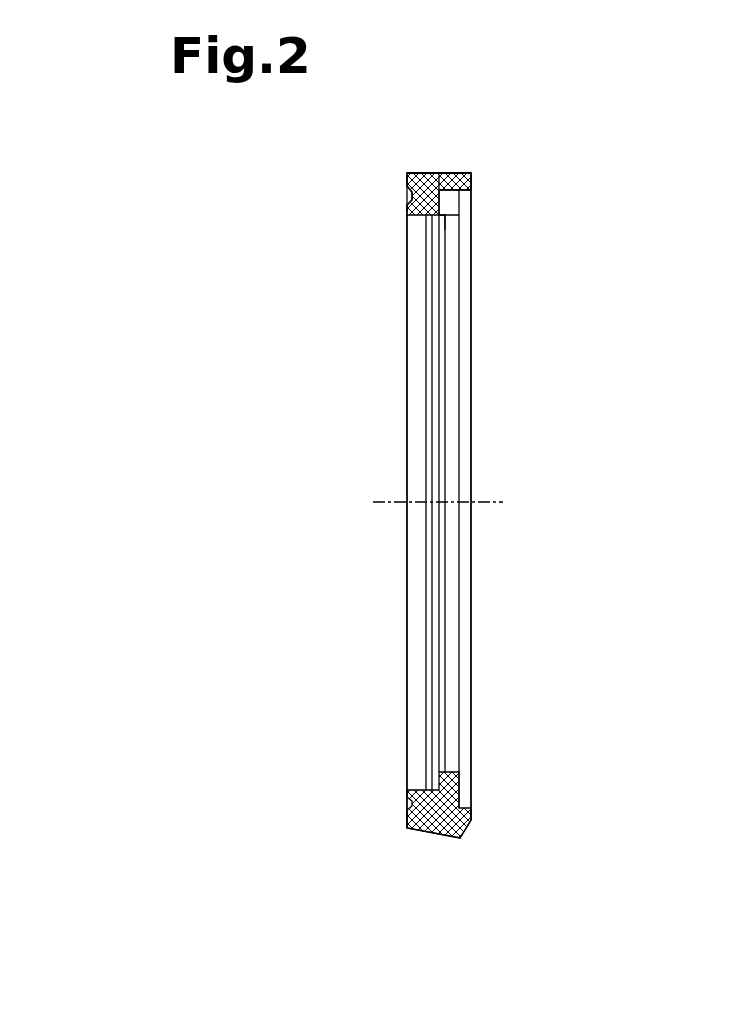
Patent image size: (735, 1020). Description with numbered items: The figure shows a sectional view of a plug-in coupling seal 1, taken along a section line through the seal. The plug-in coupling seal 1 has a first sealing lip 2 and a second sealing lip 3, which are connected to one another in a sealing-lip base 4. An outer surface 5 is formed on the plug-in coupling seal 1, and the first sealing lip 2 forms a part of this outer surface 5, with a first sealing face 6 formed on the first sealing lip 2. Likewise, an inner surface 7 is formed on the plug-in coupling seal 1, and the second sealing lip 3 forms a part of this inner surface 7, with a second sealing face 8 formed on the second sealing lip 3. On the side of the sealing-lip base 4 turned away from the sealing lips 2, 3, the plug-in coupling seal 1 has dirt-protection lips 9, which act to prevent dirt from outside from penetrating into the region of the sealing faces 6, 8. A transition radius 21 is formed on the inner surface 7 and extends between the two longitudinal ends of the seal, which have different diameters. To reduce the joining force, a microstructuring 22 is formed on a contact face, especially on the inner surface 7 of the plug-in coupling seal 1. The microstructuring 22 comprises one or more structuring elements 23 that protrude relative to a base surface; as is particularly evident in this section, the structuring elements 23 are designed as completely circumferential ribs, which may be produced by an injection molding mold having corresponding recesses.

The plug-in coupling seal 1 is at (630, 148).
The first sealing lip 2 is at (460, 174).
The second sealing lip 3 is at (452, 212).
The sealing-lip base 4 is at (425, 175).
The outer surface 5 is at (455, 145).
The first sealing face 6 is at (468, 180).
The inner surface 7 is at (428, 212).
The second sealing face 8 is at (447, 228).
The dirt-protection lip 9 is at (408, 179).
The transition radius 21 is at (408, 232).
The microstructuring 22 is at (454, 379).
The structuring element 23 is at (446, 446).